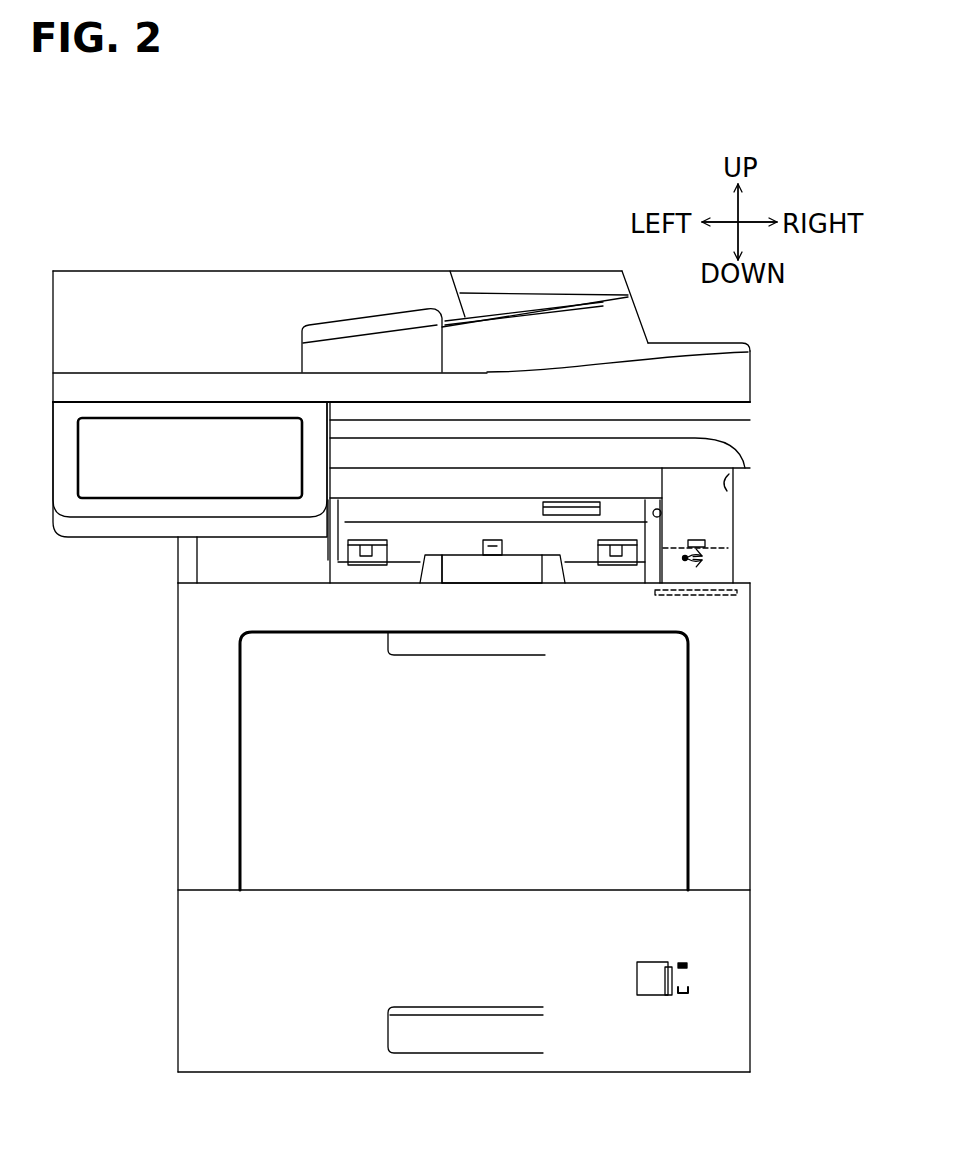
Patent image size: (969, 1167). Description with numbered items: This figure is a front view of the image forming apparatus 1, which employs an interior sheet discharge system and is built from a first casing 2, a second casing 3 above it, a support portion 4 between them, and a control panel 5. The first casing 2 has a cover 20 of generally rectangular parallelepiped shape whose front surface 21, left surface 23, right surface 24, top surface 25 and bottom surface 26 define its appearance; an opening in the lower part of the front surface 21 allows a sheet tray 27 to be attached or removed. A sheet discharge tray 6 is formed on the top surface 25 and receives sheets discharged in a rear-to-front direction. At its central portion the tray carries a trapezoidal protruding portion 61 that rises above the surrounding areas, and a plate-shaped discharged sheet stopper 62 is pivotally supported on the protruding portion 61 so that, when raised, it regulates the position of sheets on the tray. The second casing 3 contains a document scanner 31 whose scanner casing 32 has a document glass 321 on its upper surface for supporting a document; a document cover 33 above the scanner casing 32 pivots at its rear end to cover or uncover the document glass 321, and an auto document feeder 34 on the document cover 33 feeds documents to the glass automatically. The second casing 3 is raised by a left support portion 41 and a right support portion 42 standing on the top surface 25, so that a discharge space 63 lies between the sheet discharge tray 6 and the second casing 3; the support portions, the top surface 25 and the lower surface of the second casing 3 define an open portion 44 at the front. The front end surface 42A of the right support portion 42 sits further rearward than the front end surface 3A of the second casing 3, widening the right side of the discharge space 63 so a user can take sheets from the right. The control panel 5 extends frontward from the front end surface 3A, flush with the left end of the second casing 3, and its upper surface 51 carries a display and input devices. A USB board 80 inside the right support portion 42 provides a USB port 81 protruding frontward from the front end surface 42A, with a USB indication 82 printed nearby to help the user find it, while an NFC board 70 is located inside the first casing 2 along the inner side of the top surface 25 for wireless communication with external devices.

The image forming apparatus 1 is at (92, 208).
The first casing 2 is at (166, 722).
The second casing 3 is at (105, 263).
The front end surface 3A is at (680, 375).
The support portion 4 is at (755, 521).
The control panel 5 is at (80, 541).
The sheet discharge tray 6 is at (578, 582).
The cover 20 is at (176, 755).
The front surface 21 is at (190, 800).
The left surface 23 is at (178, 680).
The right surface 24 is at (752, 683).
The top surface 25 is at (258, 583).
The bottom surface 26 is at (685, 1072).
The sheet tray 27 is at (290, 1072).
The document scanner 31 is at (757, 343).
The scanner casing 32 is at (752, 422).
The document cover 33 is at (742, 340).
The auto document feeder 34 is at (176, 270).
The left support portion 41 is at (210, 565).
The right support portion 42 is at (751, 488).
The front end surface 42A is at (728, 477).
The open portion 44 is at (661, 516).
The upper surface 51 is at (135, 413).
The protruding portion 61 is at (432, 553).
The discharged sheet stopper 62 is at (460, 555).
The discharge space 63 is at (421, 553).
The NFC board 70 is at (738, 598).
The USB board 80 is at (732, 552).
The USB port 81 is at (706, 544).
The USB indication 82 is at (704, 562).
The document glass 321 is at (752, 398).